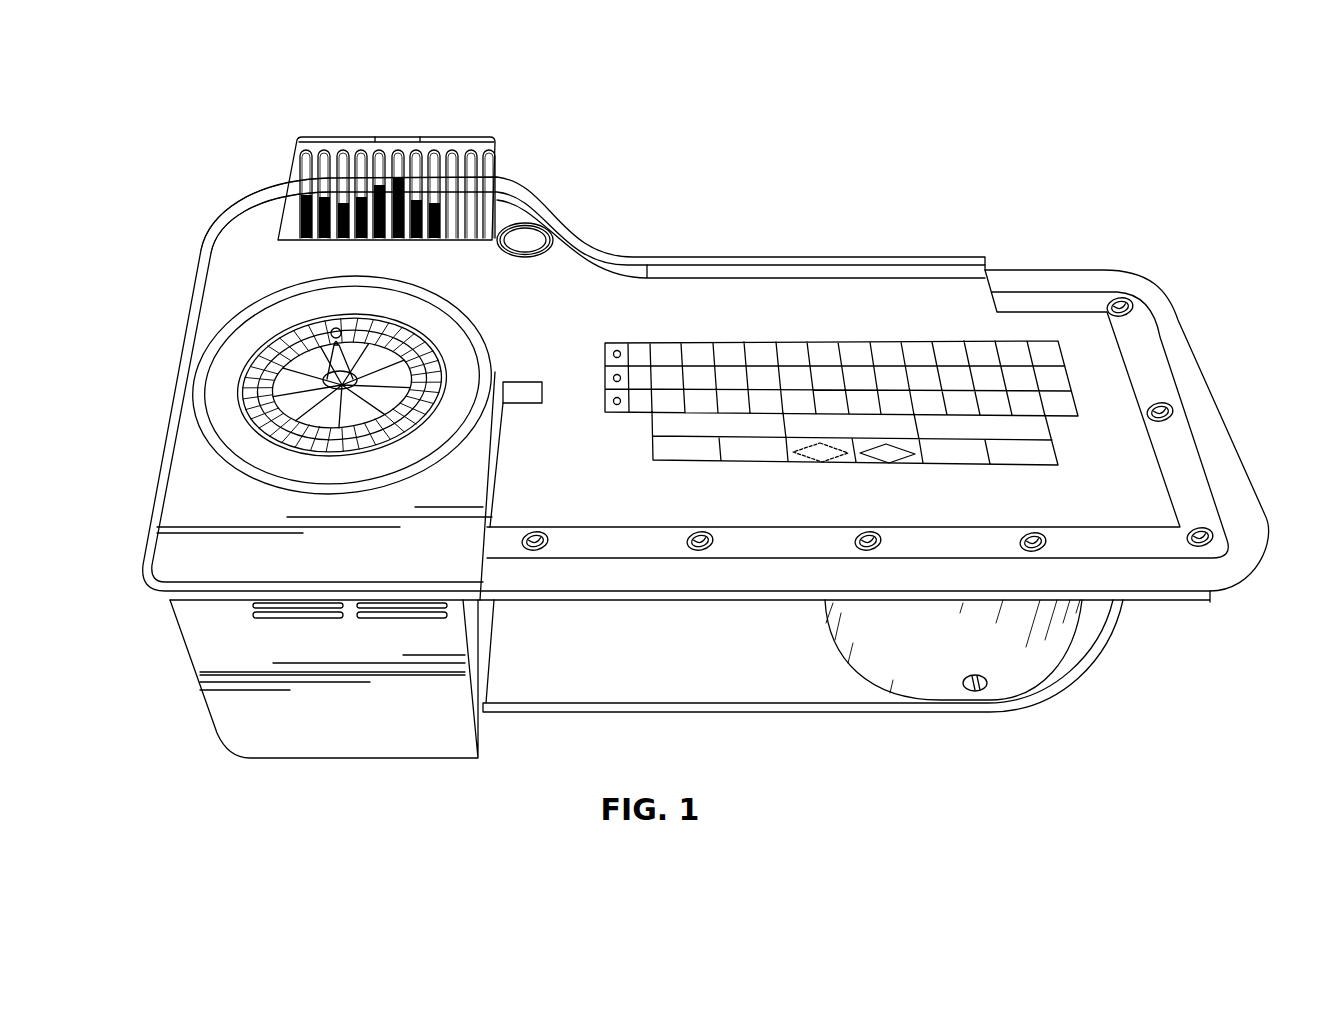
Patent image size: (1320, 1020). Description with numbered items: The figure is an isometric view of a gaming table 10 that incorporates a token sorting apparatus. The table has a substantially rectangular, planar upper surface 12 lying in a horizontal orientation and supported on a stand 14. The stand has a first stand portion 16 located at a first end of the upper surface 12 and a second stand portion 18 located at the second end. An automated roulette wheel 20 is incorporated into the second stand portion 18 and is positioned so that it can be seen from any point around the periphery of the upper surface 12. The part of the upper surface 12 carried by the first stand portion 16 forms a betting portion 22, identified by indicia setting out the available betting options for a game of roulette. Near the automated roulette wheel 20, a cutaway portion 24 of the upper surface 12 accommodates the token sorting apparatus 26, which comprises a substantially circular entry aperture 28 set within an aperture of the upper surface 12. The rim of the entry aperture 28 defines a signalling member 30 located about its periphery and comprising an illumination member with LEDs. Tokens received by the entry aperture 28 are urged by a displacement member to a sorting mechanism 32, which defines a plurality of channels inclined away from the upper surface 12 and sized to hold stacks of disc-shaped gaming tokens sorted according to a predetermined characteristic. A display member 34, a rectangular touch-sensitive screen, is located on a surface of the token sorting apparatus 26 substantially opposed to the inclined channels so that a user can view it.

The gaming table 10 is at (216, 78).
The upper surface 12 is at (712, 290).
The stand 14 is at (634, 665).
The first stand portion 16 is at (1017, 678).
The second stand portion 18 is at (242, 717).
The automated roulette wheel 20 is at (263, 398).
The betting portion 22 is at (910, 370).
The cutaway portion 24 is at (280, 233).
The token sorting apparatus 26 is at (452, 140).
The entry aperture 28 is at (528, 228).
The signalling member 30 is at (528, 256).
The sorting mechanism 32 is at (327, 187).
The display member 34 is at (400, 136).